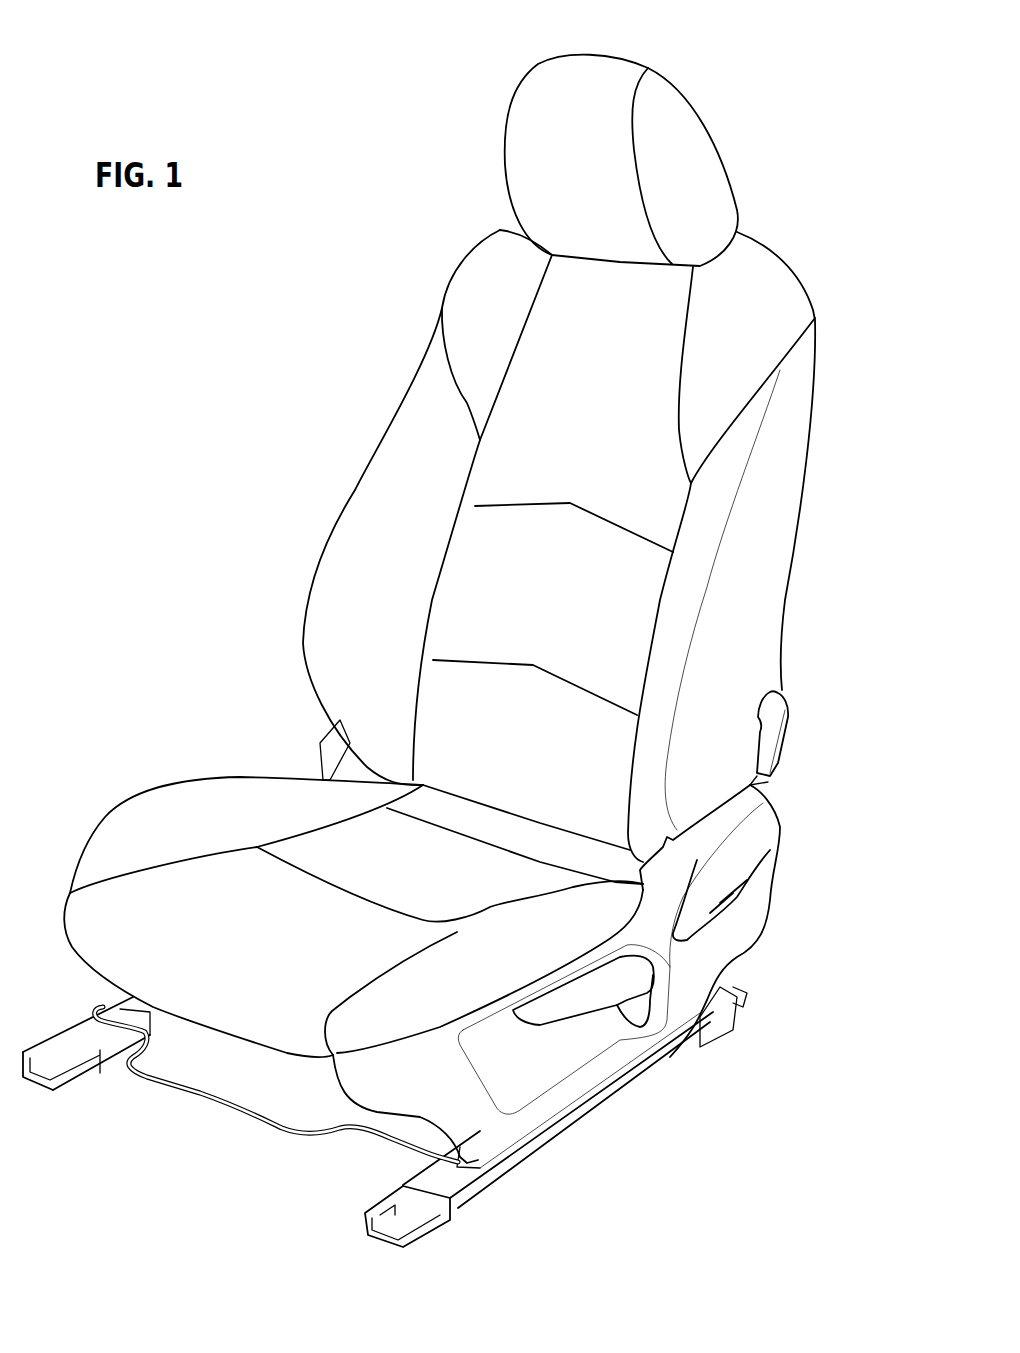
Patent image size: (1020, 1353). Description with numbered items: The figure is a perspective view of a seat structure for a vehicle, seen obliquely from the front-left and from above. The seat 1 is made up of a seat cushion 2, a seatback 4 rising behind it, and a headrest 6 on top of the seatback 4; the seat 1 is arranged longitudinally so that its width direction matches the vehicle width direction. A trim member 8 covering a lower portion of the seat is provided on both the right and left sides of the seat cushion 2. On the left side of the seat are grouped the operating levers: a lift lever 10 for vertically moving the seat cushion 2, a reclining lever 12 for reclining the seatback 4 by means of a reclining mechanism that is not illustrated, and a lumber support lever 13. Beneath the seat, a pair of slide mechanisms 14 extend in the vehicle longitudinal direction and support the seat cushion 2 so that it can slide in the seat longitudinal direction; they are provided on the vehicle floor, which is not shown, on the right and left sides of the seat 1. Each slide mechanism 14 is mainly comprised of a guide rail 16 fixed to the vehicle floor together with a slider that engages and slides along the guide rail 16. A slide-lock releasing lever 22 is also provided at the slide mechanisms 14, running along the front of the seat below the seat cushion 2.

The seat 1 is at (364, 162).
The seat cushion 2 is at (183, 905).
The seatback 4 is at (340, 497).
The headrest 6 is at (510, 125).
The trim member 8 is at (467, 1120).
The lift lever 10 is at (583, 993).
The reclining lever 12 is at (767, 820).
The lumber support lever 13 is at (790, 713).
The slide mechanism 14 is at (579, 1150).
The guide rail 16 is at (463, 1193).
The slide-lock releasing lever 22 is at (200, 1093).